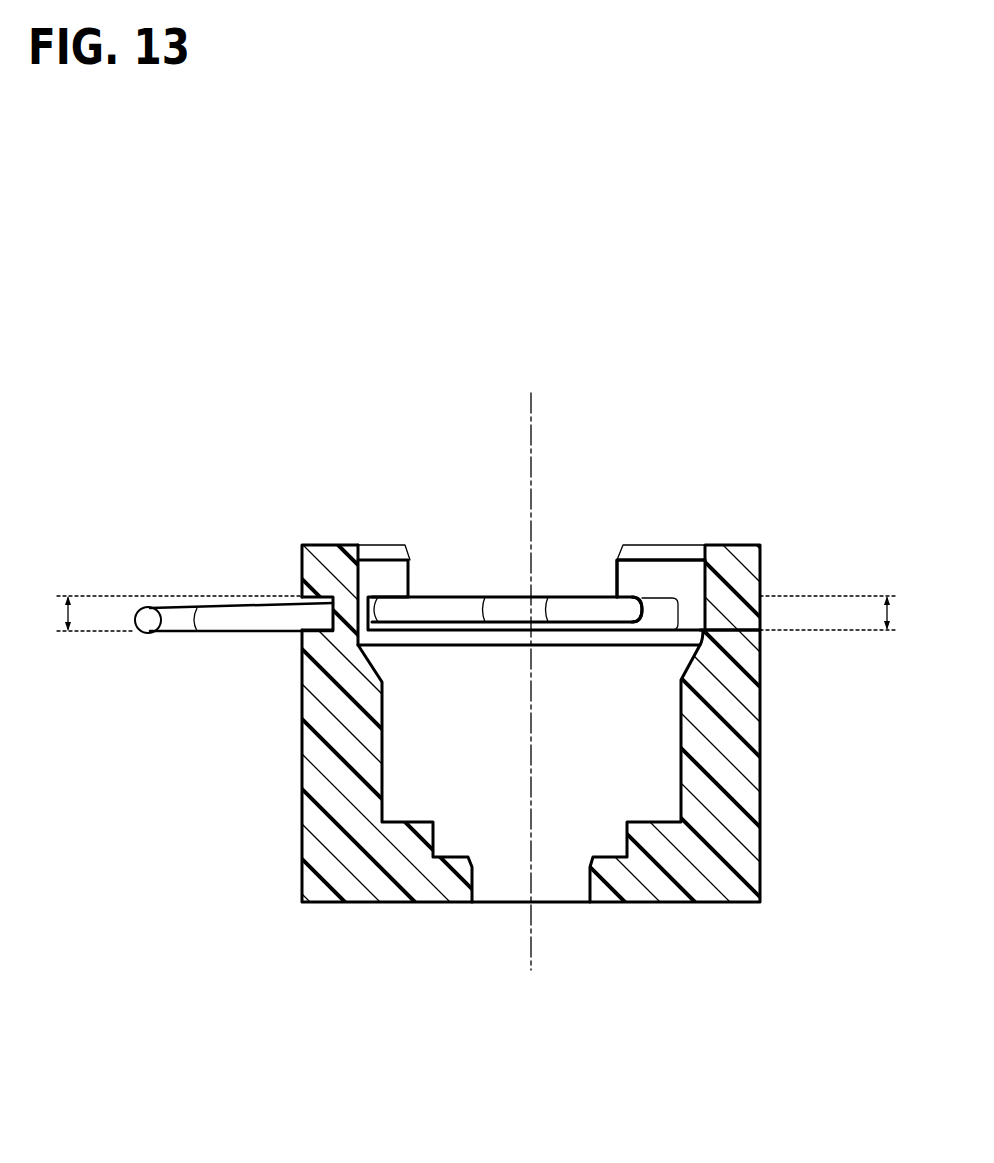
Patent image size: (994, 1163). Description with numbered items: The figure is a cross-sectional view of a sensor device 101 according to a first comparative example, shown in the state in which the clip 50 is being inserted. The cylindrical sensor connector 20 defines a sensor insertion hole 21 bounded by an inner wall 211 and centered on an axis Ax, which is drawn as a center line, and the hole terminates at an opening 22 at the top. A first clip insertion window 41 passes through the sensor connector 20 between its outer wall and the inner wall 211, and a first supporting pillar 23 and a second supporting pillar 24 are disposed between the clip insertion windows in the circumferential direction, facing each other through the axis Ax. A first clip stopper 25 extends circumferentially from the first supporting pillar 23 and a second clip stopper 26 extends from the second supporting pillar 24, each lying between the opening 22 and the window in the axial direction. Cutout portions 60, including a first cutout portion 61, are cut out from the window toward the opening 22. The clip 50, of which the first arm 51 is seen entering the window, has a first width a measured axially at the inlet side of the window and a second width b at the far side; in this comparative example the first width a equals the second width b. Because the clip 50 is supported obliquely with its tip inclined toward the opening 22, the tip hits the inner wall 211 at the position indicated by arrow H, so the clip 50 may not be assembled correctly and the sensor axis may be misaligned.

The sensor device 101 is at (782, 428).
The axis Ax is at (533, 450).
The sensor connector 20 is at (723, 837).
The sensor insertion hole 21 is at (618, 755).
The opening 22 is at (361, 557).
The first supporting pillar 23 is at (320, 625).
The second supporting pillar 24 is at (743, 612).
The first clip stopper 25 is at (388, 572).
The second clip stopper 26 is at (640, 567).
The first clip insertion window 41 is at (713, 600).
The clip 50 is at (175, 603).
The first arm 51 is at (497, 605).
The cutout portions 60 is at (617, 573).
The first cutout portion 61 is at (661, 578).
The inner wall 211 is at (663, 600).
The arrow H is at (632, 597).
The first width a is at (172, 612).
The second width b is at (839, 614).